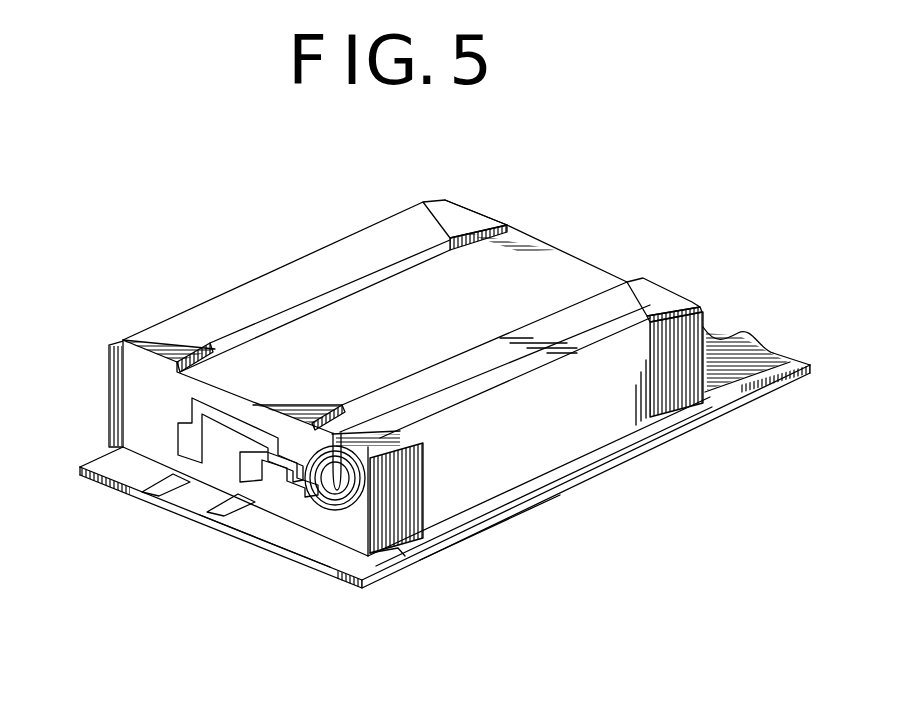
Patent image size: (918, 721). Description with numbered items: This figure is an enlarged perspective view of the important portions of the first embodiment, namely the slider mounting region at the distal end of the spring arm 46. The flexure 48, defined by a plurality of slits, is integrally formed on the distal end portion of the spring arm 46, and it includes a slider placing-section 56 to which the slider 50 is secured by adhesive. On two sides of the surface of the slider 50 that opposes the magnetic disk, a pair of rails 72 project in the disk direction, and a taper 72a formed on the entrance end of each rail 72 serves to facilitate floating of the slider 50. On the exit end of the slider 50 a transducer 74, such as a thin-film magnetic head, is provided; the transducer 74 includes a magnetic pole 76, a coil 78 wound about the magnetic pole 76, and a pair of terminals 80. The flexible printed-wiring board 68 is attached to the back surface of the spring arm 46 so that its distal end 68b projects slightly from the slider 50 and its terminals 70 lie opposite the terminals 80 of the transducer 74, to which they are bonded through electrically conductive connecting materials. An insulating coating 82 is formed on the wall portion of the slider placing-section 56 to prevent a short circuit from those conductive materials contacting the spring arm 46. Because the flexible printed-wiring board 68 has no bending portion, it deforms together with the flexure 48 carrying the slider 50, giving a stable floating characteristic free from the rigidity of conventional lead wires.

The spring arm 46 is at (730, 355).
The flexure 48 is at (530, 515).
The slider 50 is at (503, 268).
The slider placing-section 56 is at (595, 462).
The flexible printed-wiring board 68 is at (680, 427).
The distal end of the flexible printed-wiring board 68b is at (262, 538).
The terminals of the flexible printed-wiring board 70 is at (222, 511).
The rail 72 is at (318, 250).
The taper 72a is at (445, 200).
The transducer 74 is at (333, 517).
The magnetic pole 76 is at (318, 505).
The coil 78 is at (352, 508).
The terminals of the transducer 80 is at (240, 452).
The insulating coating 82 is at (400, 550).